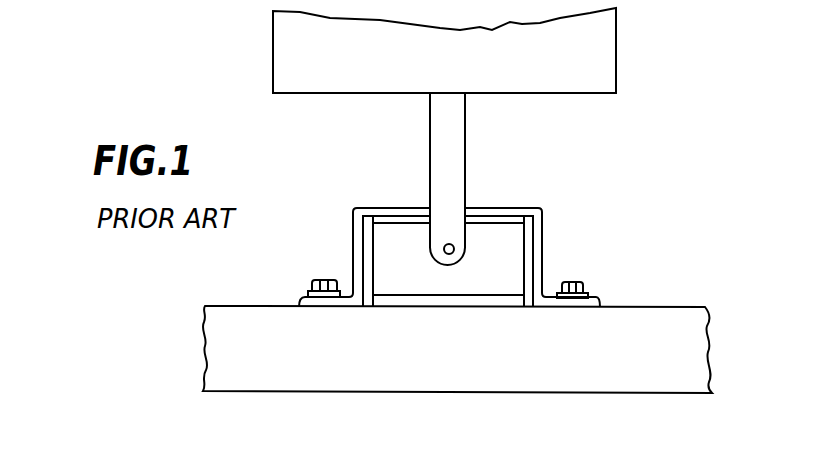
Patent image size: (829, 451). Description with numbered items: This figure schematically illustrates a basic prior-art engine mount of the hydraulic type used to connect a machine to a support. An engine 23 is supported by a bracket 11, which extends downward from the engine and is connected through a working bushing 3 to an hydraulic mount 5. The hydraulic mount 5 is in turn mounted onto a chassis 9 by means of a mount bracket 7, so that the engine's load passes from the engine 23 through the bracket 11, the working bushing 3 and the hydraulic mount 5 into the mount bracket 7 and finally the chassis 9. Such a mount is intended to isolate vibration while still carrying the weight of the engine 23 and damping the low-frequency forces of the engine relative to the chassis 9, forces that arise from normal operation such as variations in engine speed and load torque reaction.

The engine 23 is at (616, 62).
The bracket 11 is at (430, 166).
The working bushing 3 is at (453, 245).
The hydraulic mount 5 is at (397, 254).
The mount bracket 7 is at (540, 237).
The chassis 9 is at (708, 320).